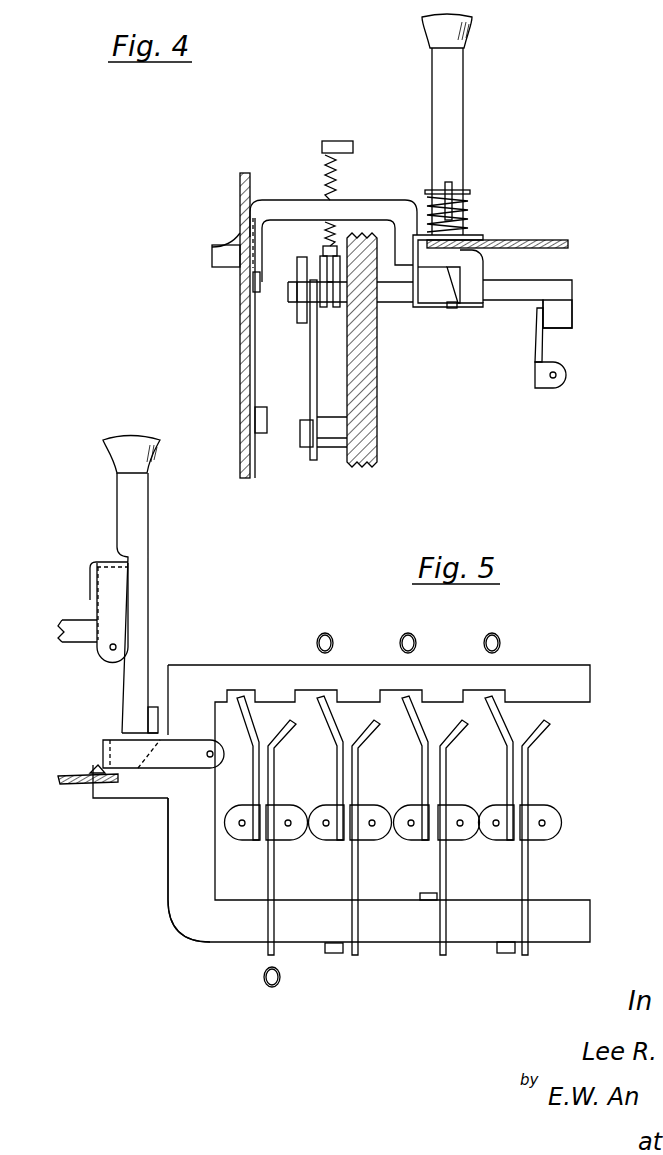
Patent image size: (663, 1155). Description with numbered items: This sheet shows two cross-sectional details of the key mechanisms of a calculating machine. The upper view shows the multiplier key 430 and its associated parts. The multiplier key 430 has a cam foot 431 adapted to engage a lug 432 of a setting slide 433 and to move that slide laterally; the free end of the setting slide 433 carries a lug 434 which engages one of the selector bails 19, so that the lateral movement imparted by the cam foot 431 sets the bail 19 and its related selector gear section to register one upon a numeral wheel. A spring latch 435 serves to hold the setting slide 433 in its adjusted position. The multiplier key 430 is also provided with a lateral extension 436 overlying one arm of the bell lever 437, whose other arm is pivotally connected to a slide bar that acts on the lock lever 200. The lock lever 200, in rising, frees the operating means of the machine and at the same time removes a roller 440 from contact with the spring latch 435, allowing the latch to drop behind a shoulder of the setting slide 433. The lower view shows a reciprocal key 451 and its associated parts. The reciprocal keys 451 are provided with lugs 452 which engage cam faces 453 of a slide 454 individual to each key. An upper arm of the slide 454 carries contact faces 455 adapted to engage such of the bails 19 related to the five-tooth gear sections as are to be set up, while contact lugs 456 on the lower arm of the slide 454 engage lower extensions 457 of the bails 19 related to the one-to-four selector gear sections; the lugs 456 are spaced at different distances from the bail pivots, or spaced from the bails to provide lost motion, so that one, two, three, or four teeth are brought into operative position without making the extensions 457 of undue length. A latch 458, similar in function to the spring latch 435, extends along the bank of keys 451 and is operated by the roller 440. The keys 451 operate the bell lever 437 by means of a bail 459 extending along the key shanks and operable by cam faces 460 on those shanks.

In FIG. 4, the multiplier key 430 is at (457, 80).
In FIG. 4, the lateral extension 436 is at (279, 205).
In FIG. 4, the bell lever 437 is at (255, 333).
In FIG. 4, the spring latch 435 is at (323, 248).
In FIG. 4, the roller 440 is at (328, 313).
In FIG. 5, the roller 440 is at (70, 784).
In FIG. 4, the lock lever 200 is at (313, 402).
In FIG. 4, the cam foot 431 is at (453, 288).
In FIG. 4, the lug 432 is at (452, 310).
In FIG. 4, the setting slide 433 is at (558, 283).
In FIG. 4, the lug 434 is at (563, 318).
In FIG. 4, the selector bail 19 is at (535, 358).
In FIG. 5, the selector bail 19 is at (505, 750).
In FIG. 5, the reciprocal key 451 is at (143, 526).
In FIG. 5, the cam face 460 is at (143, 553).
In FIG. 5, the bail 459 is at (90, 583).
In FIG. 5, the contact face 455 is at (222, 697).
In FIG. 5, the slide 454 is at (180, 888).
In FIG. 5, the lug 452 is at (152, 723).
In FIG. 5, the cam face 453 is at (160, 740).
In FIG. 5, the latch 458 is at (182, 765).
In FIG. 5, the lower extension 457 is at (528, 862).
In FIG. 5, the contact lug 456 is at (500, 950).